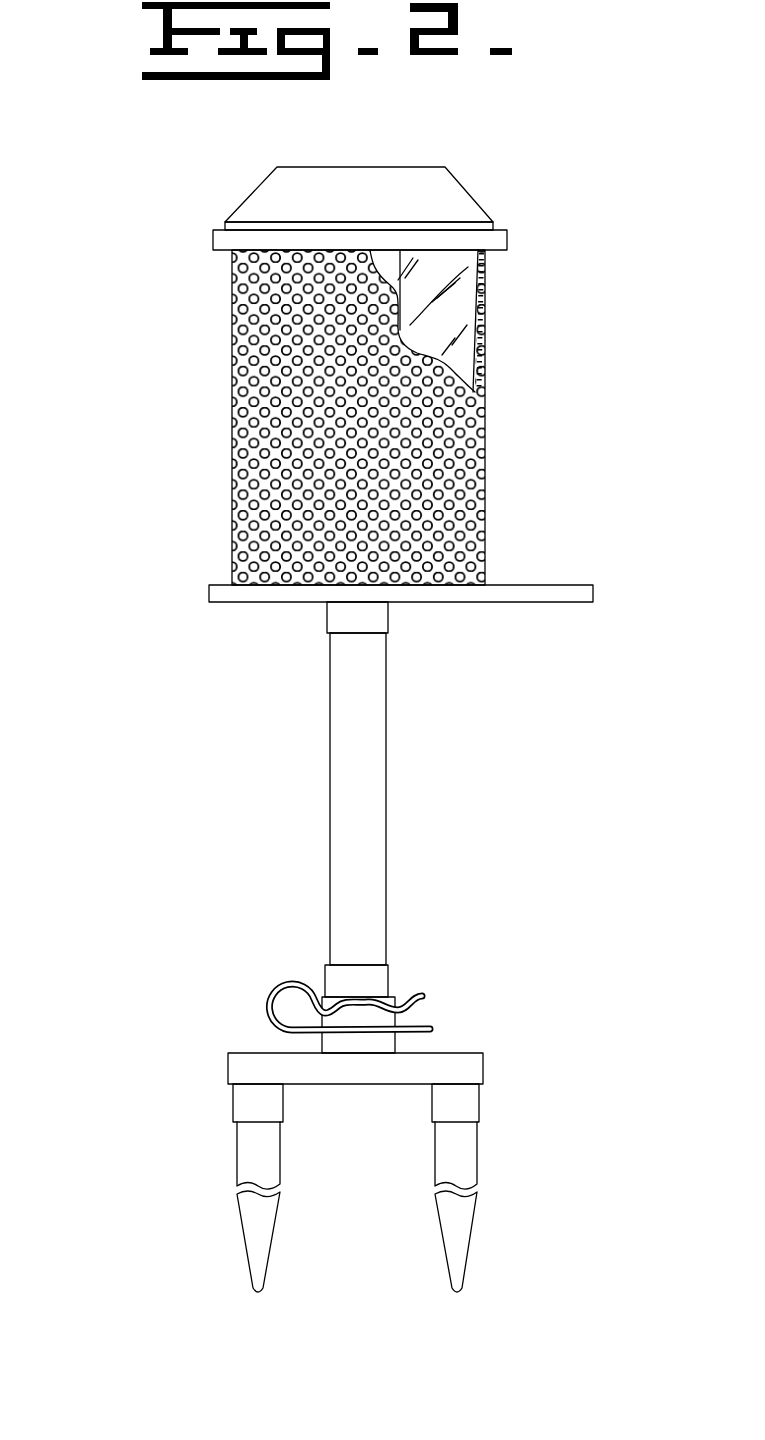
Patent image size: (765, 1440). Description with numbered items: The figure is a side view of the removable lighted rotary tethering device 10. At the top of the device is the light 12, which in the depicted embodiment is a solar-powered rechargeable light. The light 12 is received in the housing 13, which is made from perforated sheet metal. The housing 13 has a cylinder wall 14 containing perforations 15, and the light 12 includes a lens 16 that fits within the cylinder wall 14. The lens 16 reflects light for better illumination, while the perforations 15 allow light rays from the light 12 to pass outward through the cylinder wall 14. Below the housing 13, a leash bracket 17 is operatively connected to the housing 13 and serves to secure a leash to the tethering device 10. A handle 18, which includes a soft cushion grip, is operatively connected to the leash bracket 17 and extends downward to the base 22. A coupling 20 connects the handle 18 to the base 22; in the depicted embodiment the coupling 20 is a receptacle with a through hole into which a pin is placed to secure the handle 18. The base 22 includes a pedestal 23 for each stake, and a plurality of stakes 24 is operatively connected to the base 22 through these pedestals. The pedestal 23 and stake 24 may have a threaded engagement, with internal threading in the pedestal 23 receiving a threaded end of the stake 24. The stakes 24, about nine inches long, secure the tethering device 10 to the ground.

The tethering device 10 is at (80, 144).
The light 12 is at (467, 188).
The housing 13 is at (178, 383).
The cylinder wall 14 is at (487, 320).
The perforations 15 is at (476, 425).
The lens 16 is at (460, 356).
The leash bracket 17 is at (572, 583).
The handle 18 is at (328, 758).
The coupling 20 is at (253, 982).
The base 22 is at (485, 1069).
The pedestal 23 is at (480, 1107).
The stakes 24 is at (237, 1157).